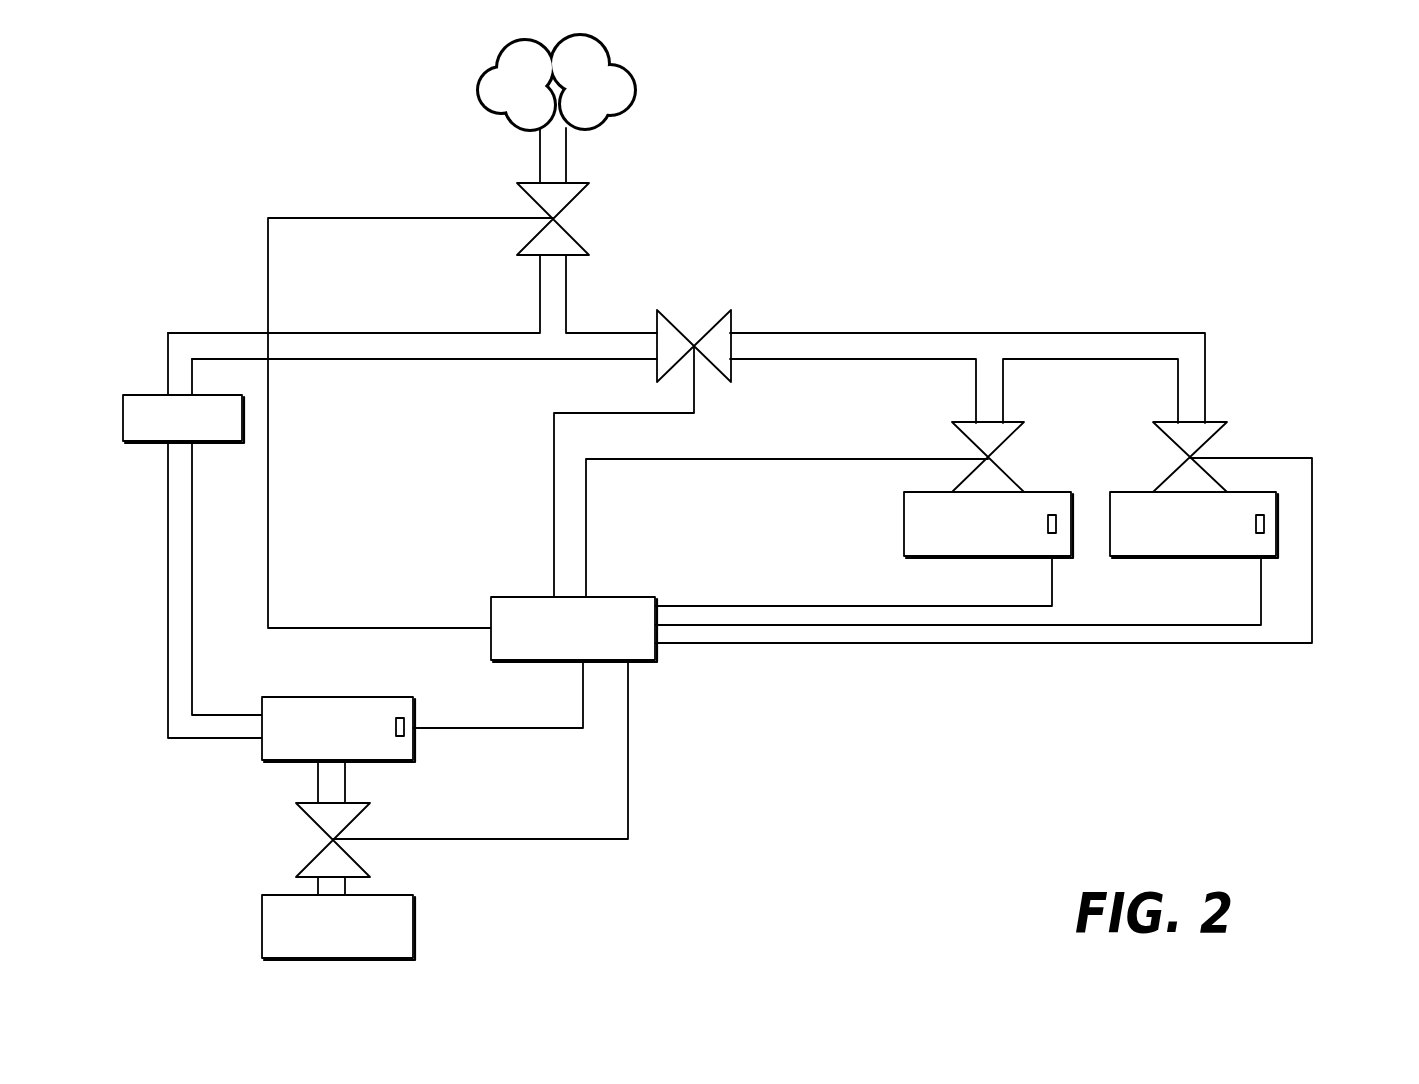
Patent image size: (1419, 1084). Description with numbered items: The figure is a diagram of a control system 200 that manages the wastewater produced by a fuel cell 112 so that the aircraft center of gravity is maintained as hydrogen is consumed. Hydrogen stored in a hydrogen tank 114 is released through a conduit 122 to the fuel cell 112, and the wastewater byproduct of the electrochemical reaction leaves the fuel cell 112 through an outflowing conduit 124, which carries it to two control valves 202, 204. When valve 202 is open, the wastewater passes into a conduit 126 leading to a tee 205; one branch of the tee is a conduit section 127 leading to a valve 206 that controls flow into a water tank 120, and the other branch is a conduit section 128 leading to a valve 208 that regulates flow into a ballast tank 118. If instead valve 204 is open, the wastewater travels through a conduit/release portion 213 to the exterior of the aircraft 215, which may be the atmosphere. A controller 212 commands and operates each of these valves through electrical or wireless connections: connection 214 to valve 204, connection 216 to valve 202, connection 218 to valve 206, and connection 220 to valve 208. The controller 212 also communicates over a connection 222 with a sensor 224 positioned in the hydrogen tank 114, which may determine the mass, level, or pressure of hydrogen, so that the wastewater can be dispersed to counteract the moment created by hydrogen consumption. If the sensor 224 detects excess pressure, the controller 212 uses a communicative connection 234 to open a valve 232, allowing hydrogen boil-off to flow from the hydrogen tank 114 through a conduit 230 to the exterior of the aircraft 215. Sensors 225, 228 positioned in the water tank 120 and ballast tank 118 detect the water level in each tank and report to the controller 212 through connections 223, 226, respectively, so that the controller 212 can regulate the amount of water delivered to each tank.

The control system 200 is at (1165, 128).
The fuel cell 112 is at (228, 442).
The hydrogen tank 114 is at (287, 697).
The ballast tank 118 is at (1160, 556).
The water tank 120 is at (904, 522).
The conduit 122 is at (212, 742).
The outflowing conduit 124 is at (350, 360).
The conduit 126 is at (815, 333).
The conduit section 127 is at (976, 395).
The conduit section 128 is at (1122, 333).
The control valve 202 is at (714, 310).
The control valve 204 is at (521, 240).
The tee 205 is at (995, 333).
The valve 206 is at (1013, 442).
The valve 208 is at (1218, 440).
The controller 212 is at (520, 662).
The conduit/release portion 213 is at (566, 152).
The electrical or wireless connection 214 is at (305, 218).
The exterior of the aircraft 215 is at (633, 86).
The electrical or wireless connection 216 is at (553, 507).
The electrical or wireless connection 218 is at (668, 460).
The electrical or wireless connection 220 is at (1312, 548).
The electrical or wireless connection 222 is at (537, 730).
The electrical or wireless connection 223 is at (768, 606).
The sensor 224 is at (405, 732).
The sensor 225 is at (1058, 515).
The electrical or wireless connection 226 is at (1072, 622).
The sensor 228 is at (1264, 520).
The conduit 230 is at (318, 778).
The valve 232 is at (310, 857).
The communicative connection 234 is at (628, 788).